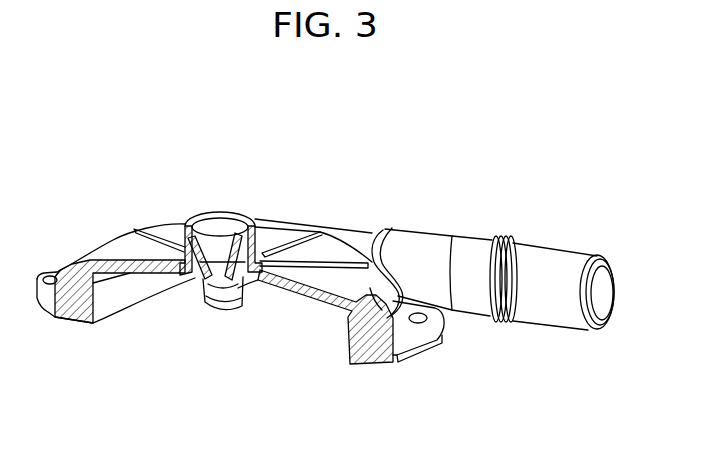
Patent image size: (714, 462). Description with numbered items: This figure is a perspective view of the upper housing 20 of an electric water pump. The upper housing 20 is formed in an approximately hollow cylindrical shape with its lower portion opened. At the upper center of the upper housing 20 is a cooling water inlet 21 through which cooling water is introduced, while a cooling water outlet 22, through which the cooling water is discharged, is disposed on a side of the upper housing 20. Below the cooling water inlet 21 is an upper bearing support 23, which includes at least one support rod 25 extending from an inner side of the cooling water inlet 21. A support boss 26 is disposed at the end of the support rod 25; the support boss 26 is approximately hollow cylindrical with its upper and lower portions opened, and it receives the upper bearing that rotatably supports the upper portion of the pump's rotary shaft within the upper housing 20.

The upper housing 20 is at (340, 178).
The cooling water inlet 21 is at (218, 226).
The cooling water outlet 22 is at (603, 291).
The upper bearing support 23 is at (153, 363).
The support rod 25 is at (190, 287).
The support boss 26 is at (205, 292).